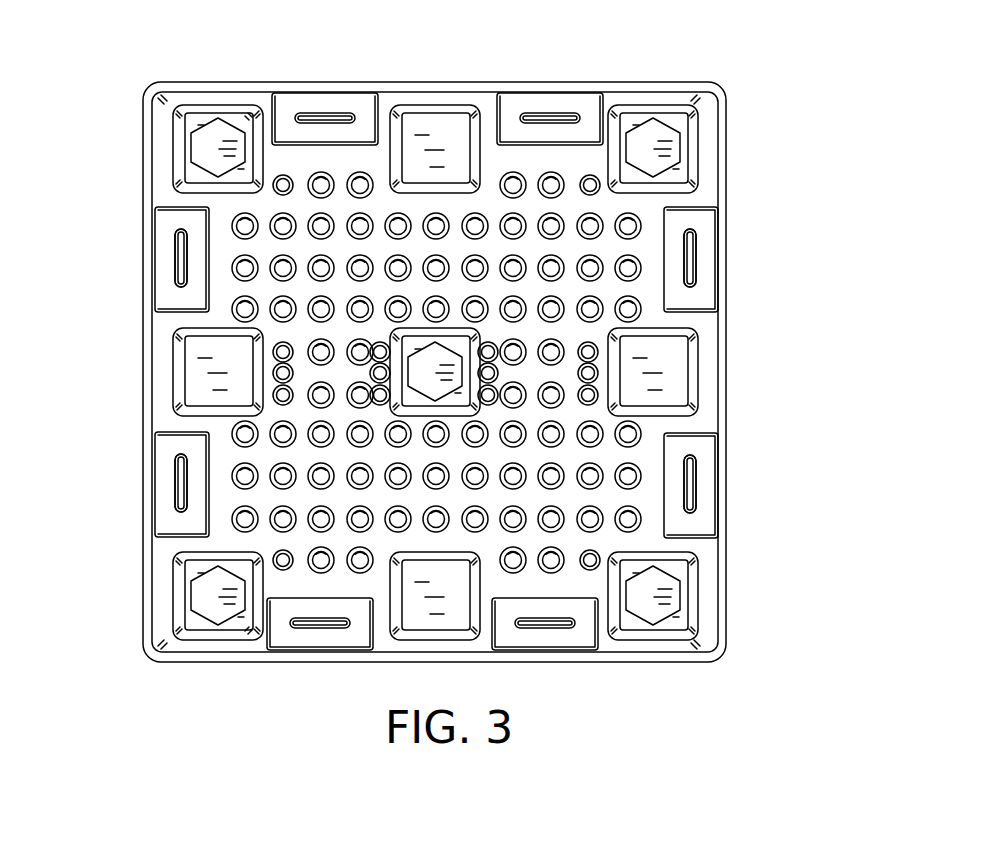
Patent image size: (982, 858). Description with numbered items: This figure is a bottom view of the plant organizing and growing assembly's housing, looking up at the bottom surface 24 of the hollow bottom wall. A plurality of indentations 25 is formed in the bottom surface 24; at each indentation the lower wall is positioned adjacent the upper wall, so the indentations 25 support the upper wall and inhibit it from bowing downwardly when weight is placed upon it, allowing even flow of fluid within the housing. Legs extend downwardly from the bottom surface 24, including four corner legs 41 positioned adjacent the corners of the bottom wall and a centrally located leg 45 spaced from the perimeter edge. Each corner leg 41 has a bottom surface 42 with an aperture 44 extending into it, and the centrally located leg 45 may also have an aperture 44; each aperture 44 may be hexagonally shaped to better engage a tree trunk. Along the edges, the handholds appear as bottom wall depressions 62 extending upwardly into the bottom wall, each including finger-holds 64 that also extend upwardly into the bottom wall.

The bottom surface 24 is at (476, 203).
The indentations 25 is at (556, 183).
The corner legs 41 is at (182, 108).
The bottom surface 42 is at (241, 119).
The aperture 44 is at (198, 137).
The centrally located leg 45 is at (397, 336).
The bottom wall depression 62 is at (172, 297).
The finger-holds 64 is at (175, 255).